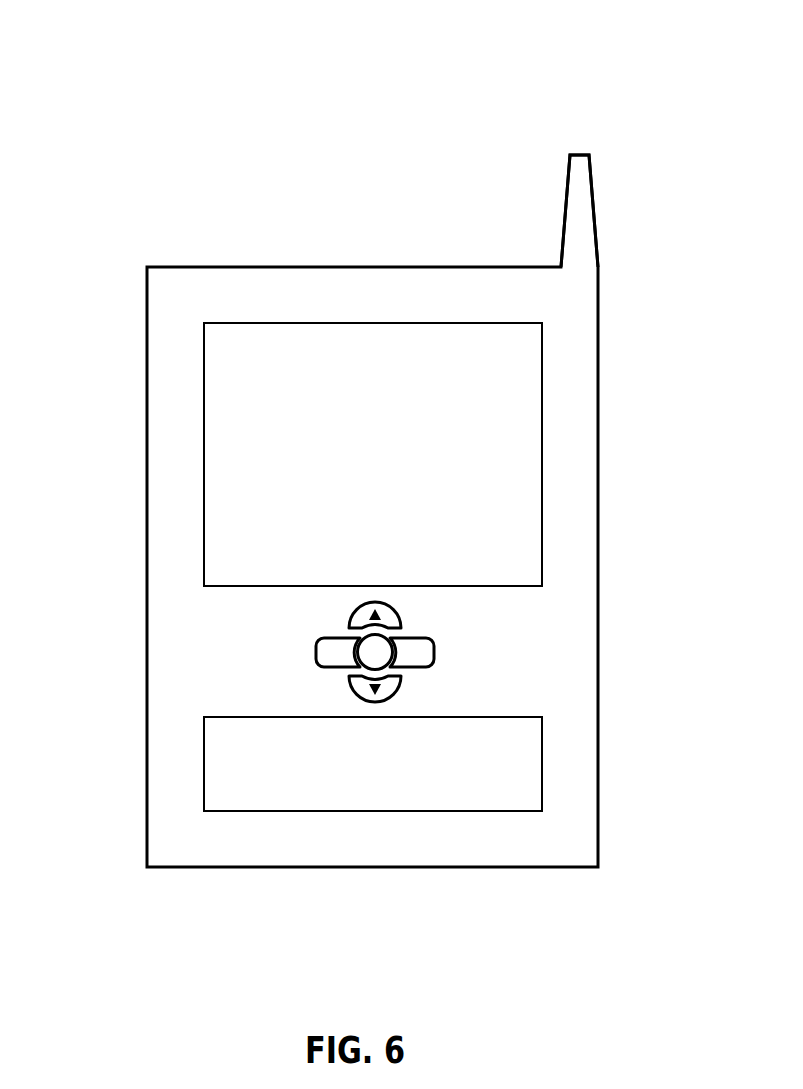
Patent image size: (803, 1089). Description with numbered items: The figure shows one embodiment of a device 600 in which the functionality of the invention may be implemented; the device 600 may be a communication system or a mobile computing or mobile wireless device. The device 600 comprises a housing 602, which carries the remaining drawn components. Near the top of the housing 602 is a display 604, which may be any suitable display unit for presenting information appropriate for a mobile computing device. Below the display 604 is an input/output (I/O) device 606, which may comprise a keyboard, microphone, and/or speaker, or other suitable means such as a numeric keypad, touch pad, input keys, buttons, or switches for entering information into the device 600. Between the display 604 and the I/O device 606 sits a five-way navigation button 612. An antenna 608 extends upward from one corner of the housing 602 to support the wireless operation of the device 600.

The device 600 is at (70, 52).
The housing 602 is at (600, 568).
The display 604 is at (542, 344).
The input/output (I/O) device 606 is at (542, 757).
The antenna 608 is at (565, 203).
The five-way navigation button 612 is at (443, 643).